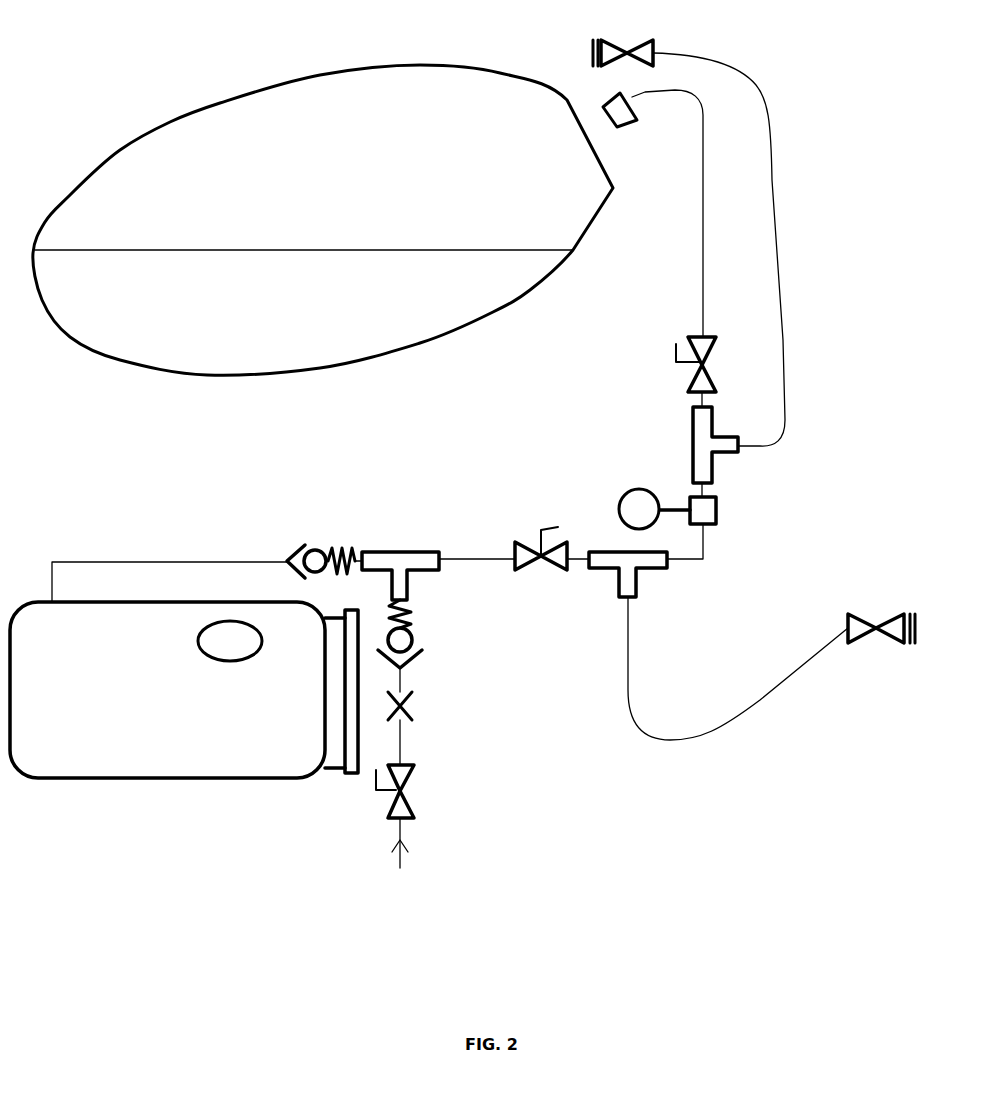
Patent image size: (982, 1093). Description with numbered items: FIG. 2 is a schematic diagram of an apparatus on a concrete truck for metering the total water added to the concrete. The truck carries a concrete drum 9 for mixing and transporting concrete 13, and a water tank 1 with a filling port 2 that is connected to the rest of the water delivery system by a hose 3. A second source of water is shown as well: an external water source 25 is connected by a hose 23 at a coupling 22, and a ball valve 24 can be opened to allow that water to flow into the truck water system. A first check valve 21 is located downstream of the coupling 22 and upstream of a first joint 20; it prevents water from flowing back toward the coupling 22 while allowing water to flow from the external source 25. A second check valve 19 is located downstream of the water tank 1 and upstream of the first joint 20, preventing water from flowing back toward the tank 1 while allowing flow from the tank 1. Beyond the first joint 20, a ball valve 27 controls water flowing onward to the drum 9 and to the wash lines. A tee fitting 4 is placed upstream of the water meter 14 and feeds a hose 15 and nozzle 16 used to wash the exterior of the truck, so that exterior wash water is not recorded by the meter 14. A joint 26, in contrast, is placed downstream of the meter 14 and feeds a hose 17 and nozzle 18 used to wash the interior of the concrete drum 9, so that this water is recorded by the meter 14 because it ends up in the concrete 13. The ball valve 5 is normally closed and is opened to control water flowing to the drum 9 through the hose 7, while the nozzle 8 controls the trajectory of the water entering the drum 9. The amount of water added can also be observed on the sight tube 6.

The water tank 1 is at (184, 690).
The filling port 2 is at (240, 641).
The hose 3 is at (514, 545).
The tee fitting 4 is at (628, 579).
The ball valve 5 is at (706, 364).
The sight tube 6 is at (390, 694).
The hose 7 is at (683, 213).
The nozzle 8 is at (622, 122).
The concrete drum 9 is at (323, 220).
The concrete 13 is at (303, 277).
The water meter 14 is at (681, 524).
The hose 15 is at (738, 668).
The nozzle 16 is at (881, 615).
The hose 17 is at (734, 249).
The nozzle 18 is at (623, 39).
The second check valve 19 is at (207, 554).
The first joint 20 is at (400, 555).
The first check valve 21 is at (414, 634).
The coupling 22 is at (411, 706).
The hose 23 is at (416, 742).
The ball valve 24 is at (408, 791).
The external water source 25 is at (415, 843).
The joint 26 is at (699, 444).
The ball valve 27 is at (541, 532).